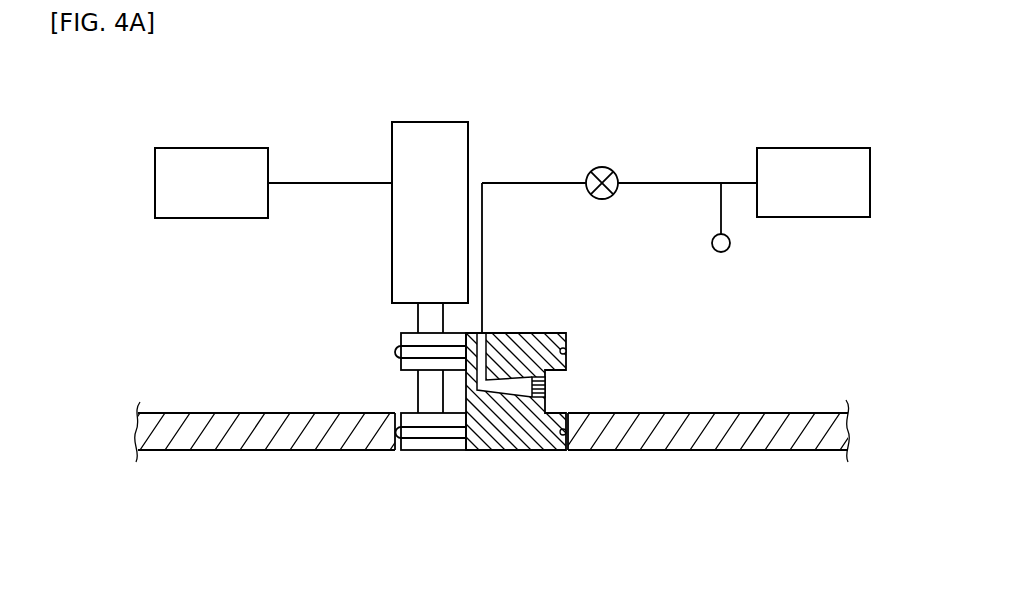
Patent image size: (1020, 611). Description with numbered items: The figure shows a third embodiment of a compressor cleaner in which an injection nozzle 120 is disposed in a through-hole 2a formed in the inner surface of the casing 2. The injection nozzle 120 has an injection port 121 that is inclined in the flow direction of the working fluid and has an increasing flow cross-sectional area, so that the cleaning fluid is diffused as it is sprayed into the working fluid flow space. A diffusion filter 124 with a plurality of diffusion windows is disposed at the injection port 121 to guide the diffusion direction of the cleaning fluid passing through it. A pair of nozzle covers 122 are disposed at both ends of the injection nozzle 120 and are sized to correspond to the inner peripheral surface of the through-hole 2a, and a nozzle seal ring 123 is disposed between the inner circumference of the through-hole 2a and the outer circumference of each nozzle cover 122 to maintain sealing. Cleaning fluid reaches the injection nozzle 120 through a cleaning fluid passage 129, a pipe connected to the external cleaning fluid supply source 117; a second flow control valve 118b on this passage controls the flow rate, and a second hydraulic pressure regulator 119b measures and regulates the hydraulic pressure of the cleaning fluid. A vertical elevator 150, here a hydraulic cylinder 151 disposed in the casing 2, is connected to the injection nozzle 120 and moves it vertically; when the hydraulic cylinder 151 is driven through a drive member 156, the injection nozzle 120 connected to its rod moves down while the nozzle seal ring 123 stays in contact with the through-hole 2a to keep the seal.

The casing 2 is at (266, 433).
The through-hole 2a is at (387, 453).
The external cleaning fluid supply source 117 is at (812, 148).
The second flow control valve 118b is at (602, 167).
The second hydraulic pressure regulator 119b is at (730, 243).
The injection nozzle 120 is at (527, 342).
The injection port 121 is at (518, 387).
The nozzle cover 122 is at (407, 340).
The nozzle seal ring 123 is at (398, 350).
The diffusion filter 124 is at (547, 380).
The cleaning fluid passage 129 is at (688, 185).
The vertical elevator 150 is at (433, 345).
The hydraulic cylinder 151 is at (392, 238).
The drive member 156 is at (212, 218).